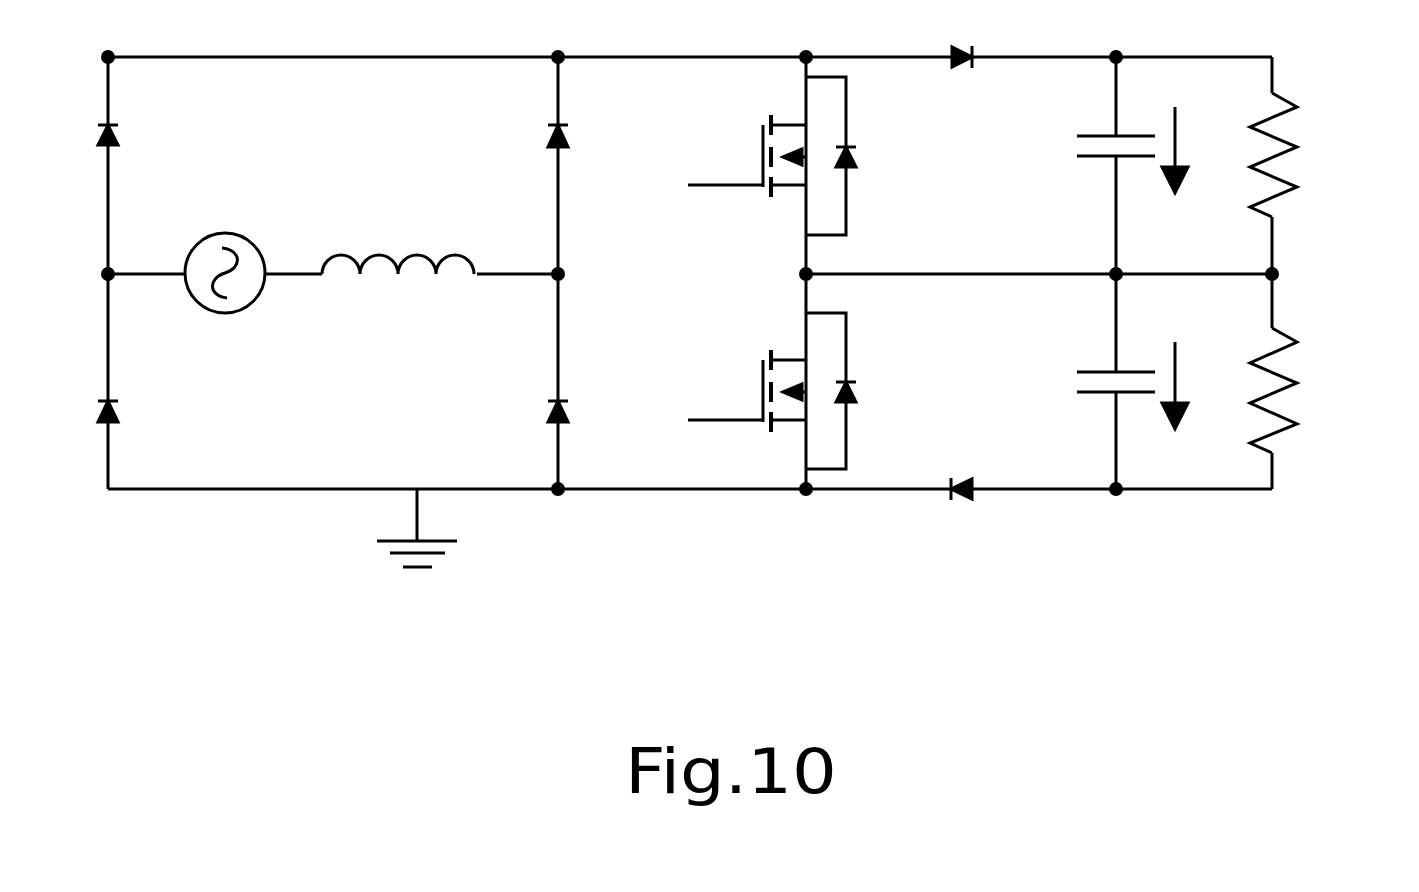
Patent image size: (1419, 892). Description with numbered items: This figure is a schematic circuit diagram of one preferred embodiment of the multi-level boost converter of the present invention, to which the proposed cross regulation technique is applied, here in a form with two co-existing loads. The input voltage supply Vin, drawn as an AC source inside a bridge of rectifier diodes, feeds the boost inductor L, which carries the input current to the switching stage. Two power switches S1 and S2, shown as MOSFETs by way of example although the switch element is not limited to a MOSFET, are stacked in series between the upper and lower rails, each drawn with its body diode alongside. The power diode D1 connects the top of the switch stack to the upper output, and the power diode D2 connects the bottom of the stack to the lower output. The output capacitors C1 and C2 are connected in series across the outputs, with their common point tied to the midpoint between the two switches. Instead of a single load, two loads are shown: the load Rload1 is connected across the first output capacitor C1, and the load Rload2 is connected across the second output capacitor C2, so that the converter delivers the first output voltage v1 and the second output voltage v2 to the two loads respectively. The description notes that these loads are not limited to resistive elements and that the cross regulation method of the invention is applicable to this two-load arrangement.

The input voltage supply Vin is at (225, 303).
The boost inductor L is at (398, 296).
The power switch S1 is at (772, 165).
The power switch S2 is at (772, 381).
The power diode D1 is at (956, 86).
The power diode D2 is at (954, 461).
The output capacitor C1 is at (1082, 165).
The output capacitor C2 is at (1082, 381).
The first output voltage v1 is at (1195, 150).
The second output voltage v2 is at (1194, 385).
The first load resistor Rload1 is at (1330, 155).
The second load resistor Rload2 is at (1330, 390).